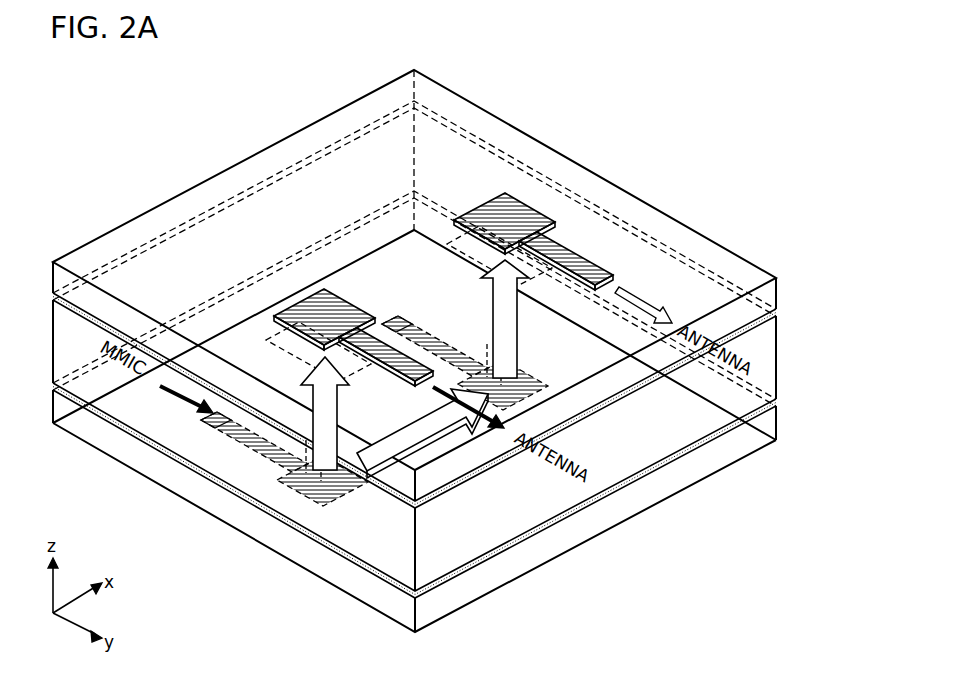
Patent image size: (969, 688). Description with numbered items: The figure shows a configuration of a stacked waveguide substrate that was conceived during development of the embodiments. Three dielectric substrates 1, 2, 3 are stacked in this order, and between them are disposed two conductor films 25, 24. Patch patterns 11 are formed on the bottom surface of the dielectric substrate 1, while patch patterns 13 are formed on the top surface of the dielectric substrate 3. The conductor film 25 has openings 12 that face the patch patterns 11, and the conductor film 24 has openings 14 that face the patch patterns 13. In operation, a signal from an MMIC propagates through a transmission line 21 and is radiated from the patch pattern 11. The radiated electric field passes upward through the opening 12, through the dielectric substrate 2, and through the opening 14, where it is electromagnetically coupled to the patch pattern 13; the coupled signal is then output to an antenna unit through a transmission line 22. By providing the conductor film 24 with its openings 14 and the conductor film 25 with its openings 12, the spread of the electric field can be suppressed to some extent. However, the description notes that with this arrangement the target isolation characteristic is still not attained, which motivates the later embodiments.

The dielectric substrate 1 is at (773, 425).
The dielectric substrate 2 is at (773, 360).
The dielectric substrate 3 is at (776, 292).
The patch pattern 11 is at (300, 500).
The opening 12 is at (306, 470).
The patch pattern 13 is at (300, 312).
The opening 14 is at (263, 342).
The transmission line 21 is at (215, 430).
The transmission line 22 is at (410, 367).
The conductor film 24 is at (777, 316).
The conductor film 25 is at (774, 406).